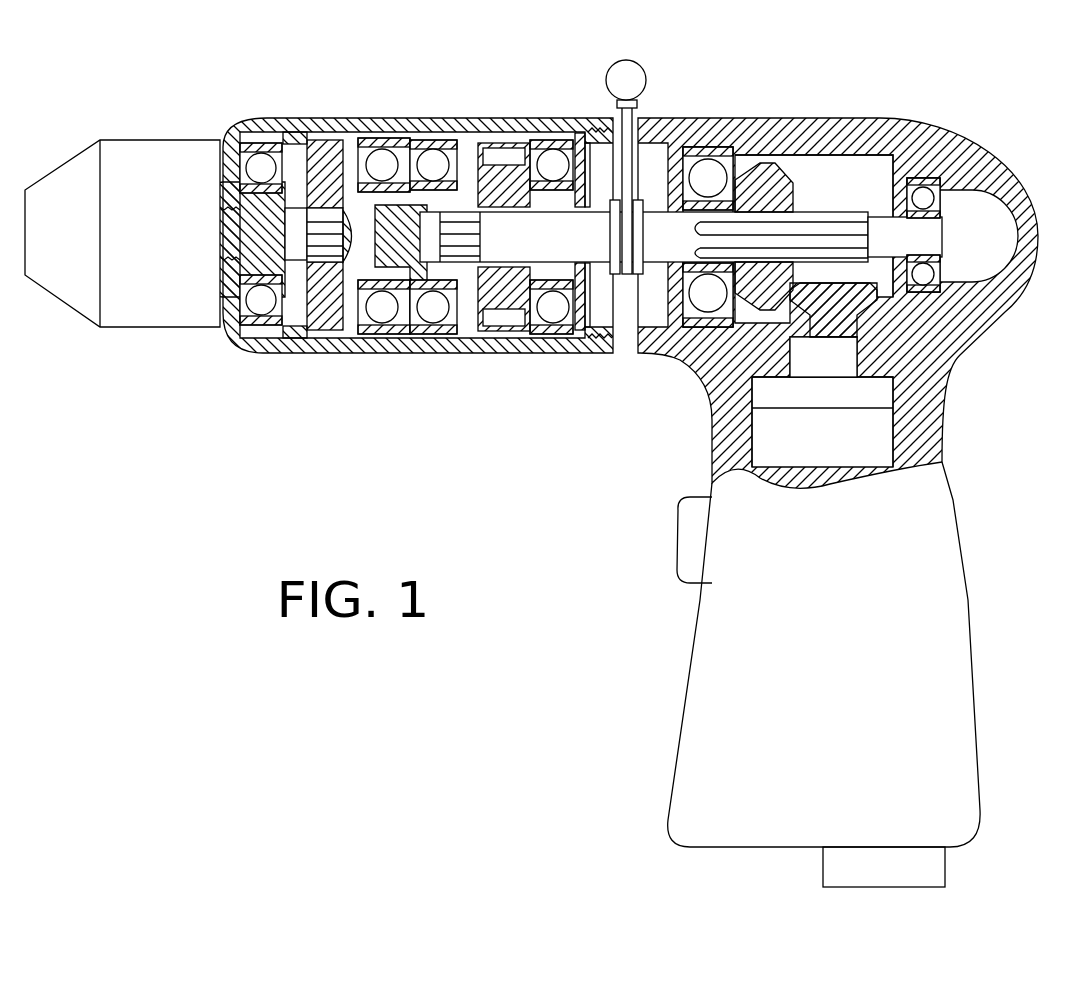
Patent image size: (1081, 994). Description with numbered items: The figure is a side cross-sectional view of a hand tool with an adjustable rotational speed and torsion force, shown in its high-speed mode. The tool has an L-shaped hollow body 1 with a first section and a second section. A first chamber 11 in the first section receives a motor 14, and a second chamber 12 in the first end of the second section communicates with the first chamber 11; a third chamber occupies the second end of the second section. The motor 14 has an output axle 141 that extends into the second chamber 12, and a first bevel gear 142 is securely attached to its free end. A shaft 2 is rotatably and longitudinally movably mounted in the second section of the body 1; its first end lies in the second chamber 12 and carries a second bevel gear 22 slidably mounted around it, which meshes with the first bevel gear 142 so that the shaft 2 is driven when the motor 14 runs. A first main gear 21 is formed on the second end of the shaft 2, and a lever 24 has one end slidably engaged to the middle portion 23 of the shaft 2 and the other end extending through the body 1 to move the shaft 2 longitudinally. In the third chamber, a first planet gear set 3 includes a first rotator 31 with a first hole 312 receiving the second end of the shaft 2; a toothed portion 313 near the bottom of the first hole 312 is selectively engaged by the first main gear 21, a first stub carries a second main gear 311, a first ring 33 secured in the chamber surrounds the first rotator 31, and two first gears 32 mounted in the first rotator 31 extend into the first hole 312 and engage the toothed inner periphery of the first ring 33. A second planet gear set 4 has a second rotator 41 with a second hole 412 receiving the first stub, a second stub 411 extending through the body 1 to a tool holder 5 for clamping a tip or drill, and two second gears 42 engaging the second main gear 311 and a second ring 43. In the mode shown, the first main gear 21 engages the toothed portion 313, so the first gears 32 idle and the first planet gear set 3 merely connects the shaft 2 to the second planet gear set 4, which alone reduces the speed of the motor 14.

The hollow body 1 is at (912, 118).
The first chamber 11 is at (875, 430).
The second chamber 12 is at (828, 180).
The motor 14 is at (838, 462).
The output axle 141 is at (842, 358).
The first bevel gear 142 is at (877, 308).
The shaft 2 is at (658, 227).
The first main gear 21 is at (462, 225).
The second bevel gear 22 is at (778, 175).
The middle portion 23 is at (618, 276).
The lever 24 is at (644, 76).
The first planet gear set 3 is at (452, 118).
The first rotator 31 is at (414, 332).
The second main gear 311 is at (322, 290).
The first hole 312 is at (548, 254).
The toothed portion 313 is at (478, 264).
The first gears 32 is at (516, 155).
The first ring 33 is at (490, 140).
The second planet gear set 4 is at (313, 118).
The second rotator 41 is at (233, 322).
The second stub 411 is at (190, 300).
The second hole 412 is at (297, 212).
The second gears 42 is at (340, 135).
The second ring 43 is at (288, 340).
The tool holder 5 is at (148, 150).